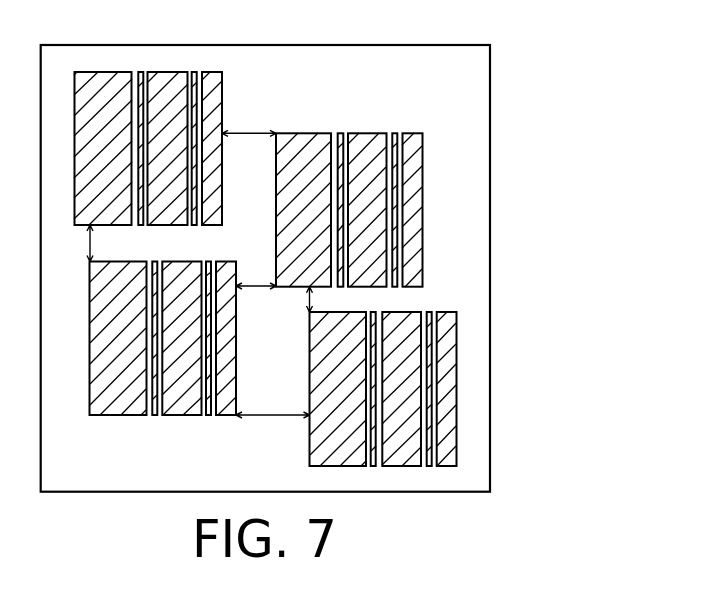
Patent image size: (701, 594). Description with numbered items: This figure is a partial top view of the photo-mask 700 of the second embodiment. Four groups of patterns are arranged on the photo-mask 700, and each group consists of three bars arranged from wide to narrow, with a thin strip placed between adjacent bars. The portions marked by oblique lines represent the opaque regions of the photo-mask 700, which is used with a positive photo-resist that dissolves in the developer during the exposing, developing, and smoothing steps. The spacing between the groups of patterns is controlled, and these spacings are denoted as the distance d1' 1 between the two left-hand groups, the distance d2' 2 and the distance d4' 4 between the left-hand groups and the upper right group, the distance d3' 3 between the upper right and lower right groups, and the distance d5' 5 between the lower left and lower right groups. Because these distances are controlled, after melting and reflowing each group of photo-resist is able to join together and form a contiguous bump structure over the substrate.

The photo-mask 700 is at (305, 268).
The distance d1' 1 is at (68, 243).
The distance d2' 2 is at (259, 302).
The distance d3' 3 is at (305, 313).
The distance d4' 4 is at (249, 119).
The distance d5' 5 is at (273, 405).